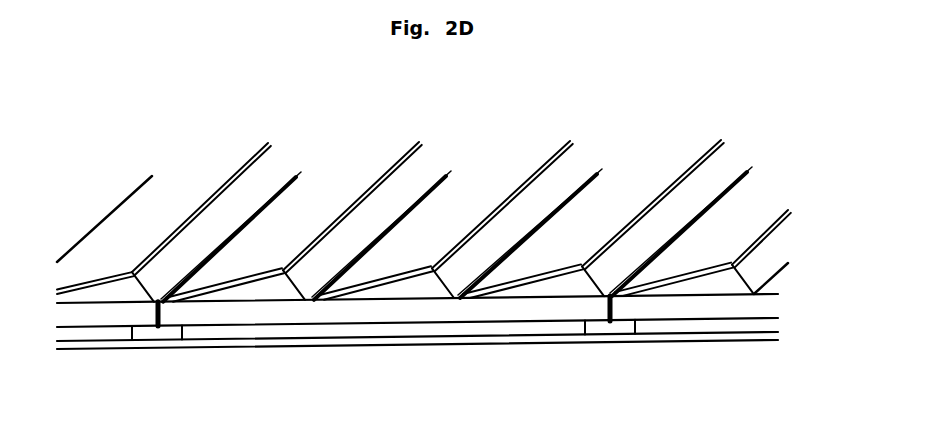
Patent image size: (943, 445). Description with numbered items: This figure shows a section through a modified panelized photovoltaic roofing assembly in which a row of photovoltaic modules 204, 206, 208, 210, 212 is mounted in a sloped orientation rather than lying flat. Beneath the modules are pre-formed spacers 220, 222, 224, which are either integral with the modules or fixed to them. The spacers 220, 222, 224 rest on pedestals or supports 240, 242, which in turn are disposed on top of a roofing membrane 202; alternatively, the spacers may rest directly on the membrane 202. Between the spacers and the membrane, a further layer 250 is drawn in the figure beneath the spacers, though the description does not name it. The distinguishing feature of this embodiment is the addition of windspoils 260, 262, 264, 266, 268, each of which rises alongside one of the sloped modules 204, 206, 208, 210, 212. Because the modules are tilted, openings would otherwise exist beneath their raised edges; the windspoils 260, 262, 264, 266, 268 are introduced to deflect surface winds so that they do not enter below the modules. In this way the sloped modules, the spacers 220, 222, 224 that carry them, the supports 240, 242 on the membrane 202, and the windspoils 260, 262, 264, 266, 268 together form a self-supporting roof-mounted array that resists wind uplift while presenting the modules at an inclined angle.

The roofing membrane 202 is at (508, 347).
The photovoltaic module 204 is at (163, 195).
The photovoltaic module 206 is at (337, 190).
The photovoltaic module 208 is at (488, 188).
The photovoltaic module 210 is at (643, 185).
The photovoltaic module 212 is at (771, 198).
The pre-formed spacer 220 is at (110, 315).
The pre-formed spacer 222 is at (312, 313).
The pre-formed spacer 224 is at (744, 308).
The pedestal or support 240 is at (170, 332).
The pedestal or support 242 is at (618, 328).
The insulating layer 250 is at (402, 330).
The windspoil 260 is at (271, 177).
The windspoil 262 is at (422, 175).
The windspoil 264 is at (578, 172).
The windspoil 266 is at (727, 172).
The windspoil 268 is at (772, 267).